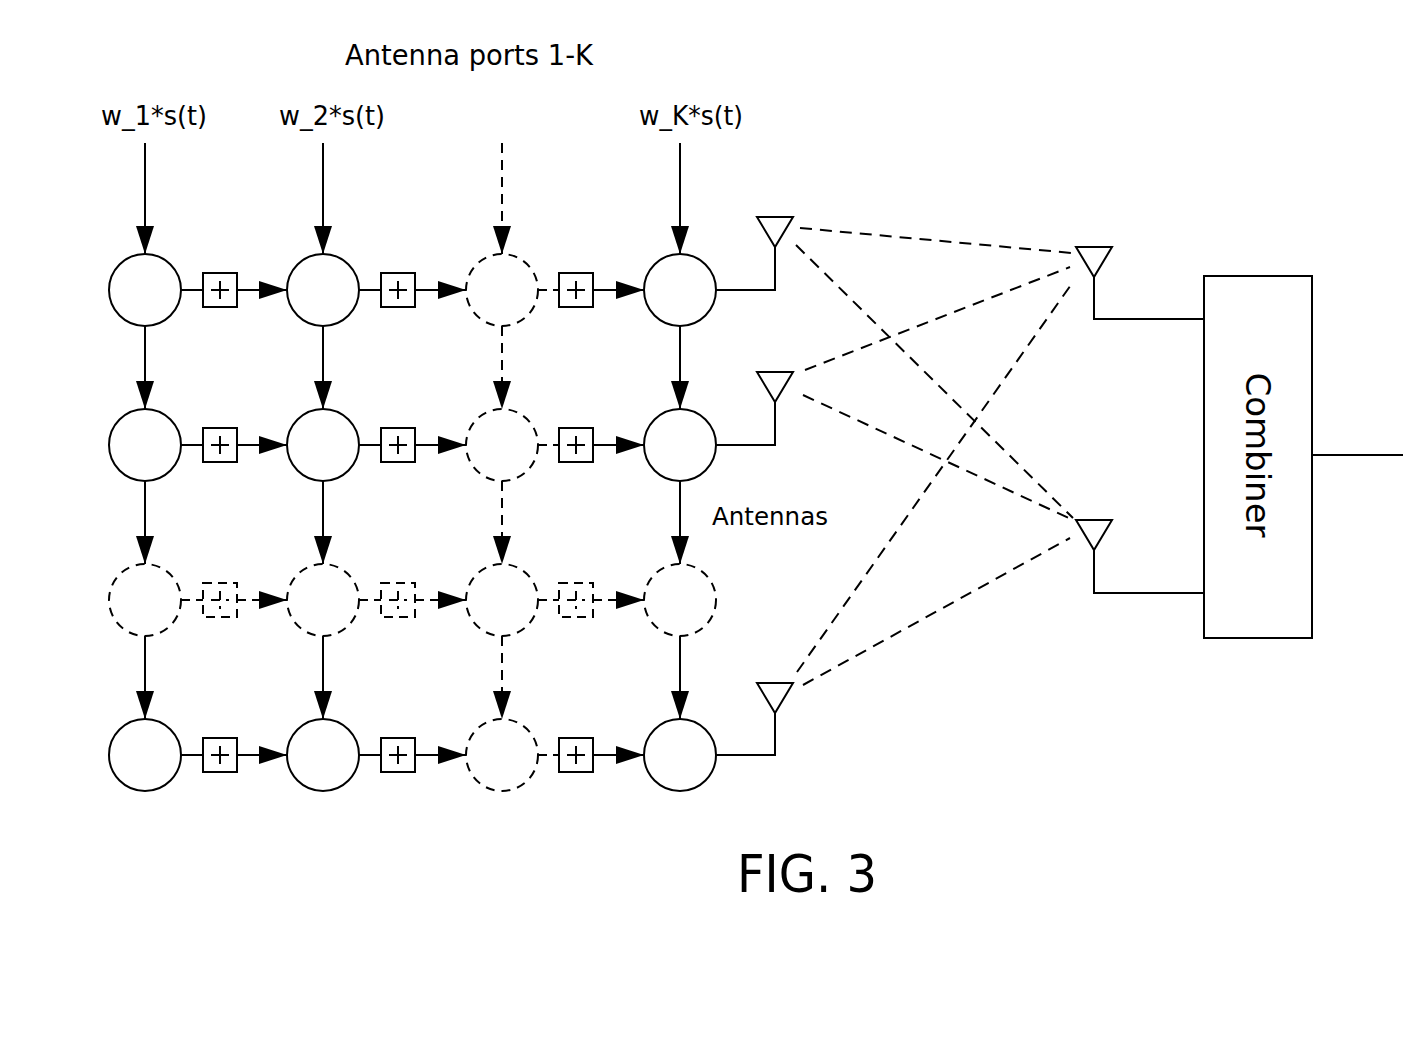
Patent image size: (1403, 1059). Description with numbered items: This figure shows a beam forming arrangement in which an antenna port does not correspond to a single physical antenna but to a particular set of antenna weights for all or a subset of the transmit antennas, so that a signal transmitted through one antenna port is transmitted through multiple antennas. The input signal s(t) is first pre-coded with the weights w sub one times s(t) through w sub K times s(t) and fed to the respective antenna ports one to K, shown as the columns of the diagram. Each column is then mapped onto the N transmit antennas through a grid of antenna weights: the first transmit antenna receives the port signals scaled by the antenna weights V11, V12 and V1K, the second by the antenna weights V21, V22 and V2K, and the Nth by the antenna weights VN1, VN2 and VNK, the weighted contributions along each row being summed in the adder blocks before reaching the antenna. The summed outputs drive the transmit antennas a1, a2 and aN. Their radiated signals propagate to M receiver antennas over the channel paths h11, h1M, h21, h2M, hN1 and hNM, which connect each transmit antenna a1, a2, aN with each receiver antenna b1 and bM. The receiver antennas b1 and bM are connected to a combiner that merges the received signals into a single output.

The antenna weight V11 is at (145, 290).
The antenna weight V12 is at (323, 290).
The antenna weight V1K is at (680, 290).
The antenna weight V21 is at (145, 445).
The antenna weight V22 is at (323, 445).
The antenna weight V2K is at (680, 445).
The antenna weight VN1 is at (145, 755).
The antenna weight VN2 is at (323, 755).
The antenna weight VNK is at (680, 755).
The transmit antenna a1 is at (775, 209).
The transmit antenna a2 is at (775, 365).
The transmit antenna aN is at (770, 677).
The receiver antenna b1 is at (1140, 262).
The receiver antenna bM is at (1140, 536).
The channel path h11 is at (900, 237).
The channel path h1M is at (852, 293).
The channel path h21 is at (837, 358).
The channel path h2M is at (842, 412).
The channel path hN1 is at (890, 537).
The channel path hNM is at (898, 632).